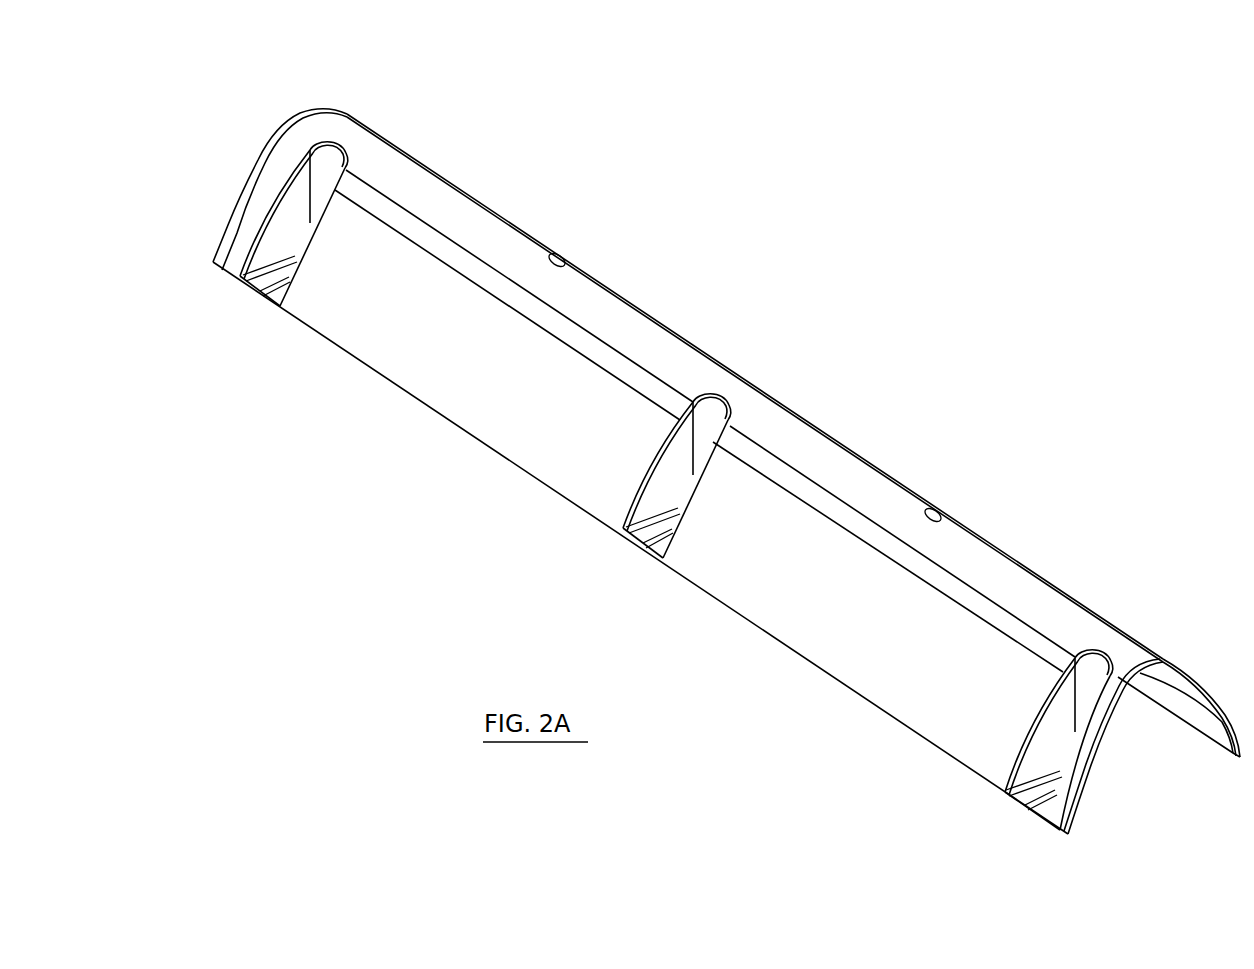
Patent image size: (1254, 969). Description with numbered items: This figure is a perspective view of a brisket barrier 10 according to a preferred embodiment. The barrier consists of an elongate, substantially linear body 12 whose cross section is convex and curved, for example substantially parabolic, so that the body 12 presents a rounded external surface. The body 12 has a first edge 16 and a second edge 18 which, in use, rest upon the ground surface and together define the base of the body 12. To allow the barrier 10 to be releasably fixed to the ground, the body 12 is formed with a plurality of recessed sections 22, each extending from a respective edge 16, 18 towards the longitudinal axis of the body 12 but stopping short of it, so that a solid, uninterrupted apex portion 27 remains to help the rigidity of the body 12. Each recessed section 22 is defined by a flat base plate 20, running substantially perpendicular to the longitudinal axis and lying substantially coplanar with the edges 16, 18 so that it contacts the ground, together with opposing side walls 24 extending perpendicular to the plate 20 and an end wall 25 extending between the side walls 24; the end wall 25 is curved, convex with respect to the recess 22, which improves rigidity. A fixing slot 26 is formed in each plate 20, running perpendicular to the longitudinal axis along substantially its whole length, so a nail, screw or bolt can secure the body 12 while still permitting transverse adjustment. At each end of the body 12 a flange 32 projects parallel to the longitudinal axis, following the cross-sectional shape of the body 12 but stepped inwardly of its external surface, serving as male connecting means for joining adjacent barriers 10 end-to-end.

The brisket barrier 10 is at (1013, 473).
The body 12 is at (885, 685).
The first edge 16 is at (768, 638).
The second edge 18 is at (1193, 727).
The plate 20 is at (253, 277).
The recessed section 22 is at (556, 262).
The side wall 24 is at (277, 222).
The end wall 25 is at (328, 158).
The fixing slot 26 is at (657, 540).
The apex portion 27 is at (1067, 620).
The flange 32 is at (300, 120).